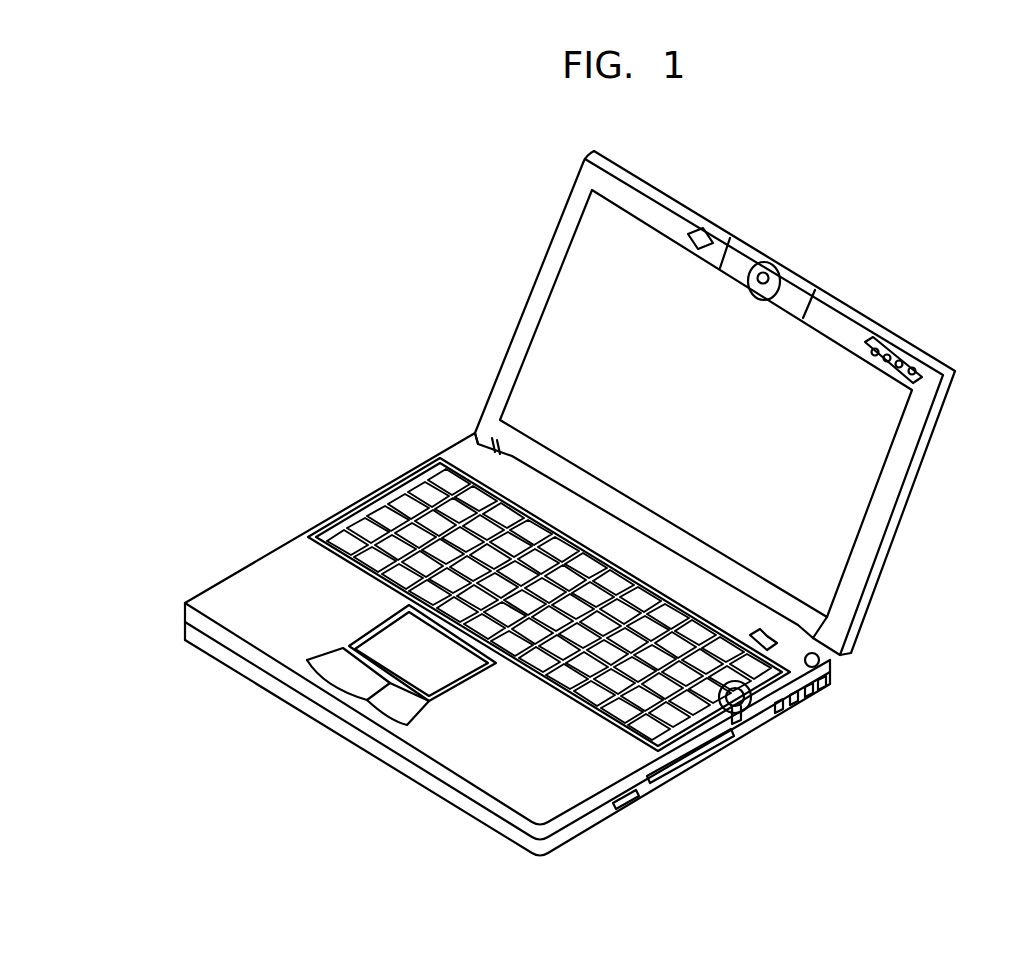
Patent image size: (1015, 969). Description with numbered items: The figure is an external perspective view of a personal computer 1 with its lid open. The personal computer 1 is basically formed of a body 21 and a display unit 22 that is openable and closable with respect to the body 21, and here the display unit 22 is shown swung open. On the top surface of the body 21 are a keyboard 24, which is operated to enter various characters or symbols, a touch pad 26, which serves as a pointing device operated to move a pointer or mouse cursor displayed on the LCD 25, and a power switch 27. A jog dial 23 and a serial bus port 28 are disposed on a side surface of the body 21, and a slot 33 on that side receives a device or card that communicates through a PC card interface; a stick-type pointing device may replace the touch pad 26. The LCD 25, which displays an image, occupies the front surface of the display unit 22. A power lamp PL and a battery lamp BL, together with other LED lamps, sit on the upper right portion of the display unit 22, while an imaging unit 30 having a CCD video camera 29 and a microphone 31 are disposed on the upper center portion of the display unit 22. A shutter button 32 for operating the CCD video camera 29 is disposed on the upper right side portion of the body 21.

The personal computer 1 is at (403, 812).
The body 21 is at (757, 723).
The display unit 22 is at (914, 470).
The jog dial 23 is at (792, 705).
The keyboard 24 is at (380, 512).
The LCD 25 is at (830, 510).
The touch pad 26 is at (408, 660).
The power switch 27 is at (772, 642).
The IEEE 1394 port 28 is at (633, 804).
The CCD video camera 29 is at (771, 275).
The imaging unit 30 is at (757, 262).
The microphone 31 is at (701, 242).
The shutter button 32 is at (826, 658).
The slot 33 is at (698, 758).
The battery lamp BL is at (899, 360).
The power lamp PL is at (913, 369).